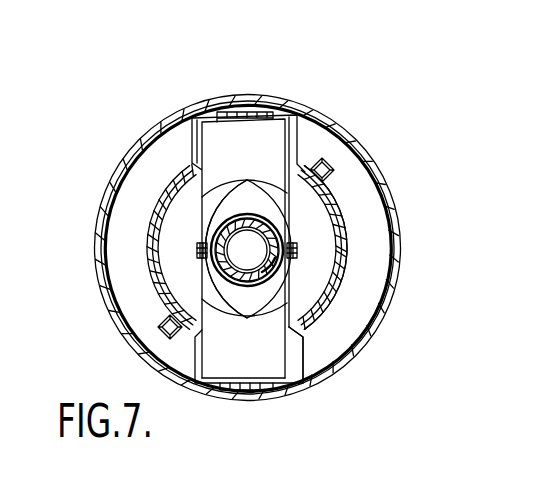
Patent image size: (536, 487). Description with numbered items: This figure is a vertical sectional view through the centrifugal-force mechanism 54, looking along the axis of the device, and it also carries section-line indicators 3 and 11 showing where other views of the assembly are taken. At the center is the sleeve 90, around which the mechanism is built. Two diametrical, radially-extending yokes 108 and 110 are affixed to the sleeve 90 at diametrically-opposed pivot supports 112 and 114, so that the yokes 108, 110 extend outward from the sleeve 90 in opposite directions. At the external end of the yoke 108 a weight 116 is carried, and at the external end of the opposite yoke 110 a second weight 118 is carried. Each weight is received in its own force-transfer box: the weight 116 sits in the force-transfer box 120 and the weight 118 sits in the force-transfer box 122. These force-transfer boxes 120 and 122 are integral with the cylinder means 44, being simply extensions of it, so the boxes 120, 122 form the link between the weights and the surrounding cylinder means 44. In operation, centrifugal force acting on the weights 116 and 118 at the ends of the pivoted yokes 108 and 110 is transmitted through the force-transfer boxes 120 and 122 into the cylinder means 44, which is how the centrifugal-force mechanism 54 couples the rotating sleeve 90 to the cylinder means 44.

The section line 3- 3 is at (245, 98).
The section line 11- 11 is at (358, 38).
The cylinder means 44 is at (322, 214).
The centrifugal-force mechanism 54 is at (298, 228).
The sleeve 90 is at (331, 241).
The yoke 108 is at (290, 180).
The yoke 110 is at (280, 303).
The pivot support 112 is at (197, 251).
The pivot support 114 is at (298, 251).
The weight 116 is at (248, 245).
The weight 118 is at (249, 358).
The force-transfer box 120 is at (317, 131).
The force-transfer box 122 is at (304, 357).